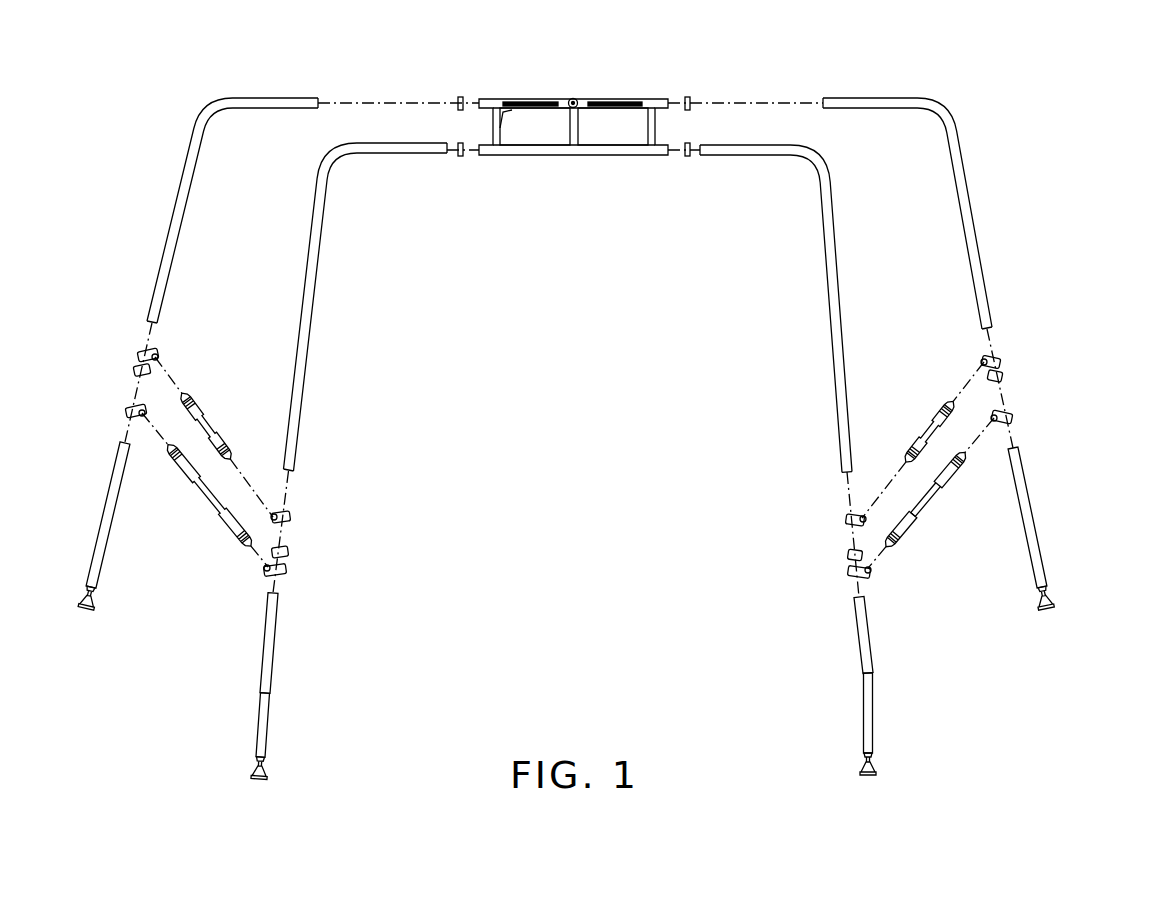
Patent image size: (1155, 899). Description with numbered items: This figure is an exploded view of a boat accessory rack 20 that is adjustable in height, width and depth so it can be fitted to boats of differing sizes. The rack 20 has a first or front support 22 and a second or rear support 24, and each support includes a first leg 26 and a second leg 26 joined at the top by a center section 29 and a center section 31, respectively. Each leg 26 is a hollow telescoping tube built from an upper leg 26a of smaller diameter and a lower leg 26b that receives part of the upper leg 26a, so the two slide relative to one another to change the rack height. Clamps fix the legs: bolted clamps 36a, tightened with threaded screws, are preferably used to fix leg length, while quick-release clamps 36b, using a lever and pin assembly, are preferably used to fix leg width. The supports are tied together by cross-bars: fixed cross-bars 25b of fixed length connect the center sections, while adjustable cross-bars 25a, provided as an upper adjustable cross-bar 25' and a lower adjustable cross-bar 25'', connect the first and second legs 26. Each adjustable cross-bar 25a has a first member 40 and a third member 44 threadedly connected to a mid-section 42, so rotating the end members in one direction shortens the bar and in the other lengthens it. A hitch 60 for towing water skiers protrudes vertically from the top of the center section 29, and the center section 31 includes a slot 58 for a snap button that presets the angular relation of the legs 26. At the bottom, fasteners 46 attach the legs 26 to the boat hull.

The boat accessory rack 20 is at (1038, 199).
The first support 22 is at (823, 270).
The second support 24 is at (960, 150).
The leg 26 is at (311, 383).
The upper leg 26a is at (195, 130).
The lower leg 26b is at (262, 683).
The adjustable cross-bar 25a is at (212, 420).
The fixed cross-bar 25b is at (502, 128).
The upper adjustable cross-bar 25' is at (923, 436).
The lower adjustable cross-bar 25'' is at (931, 494).
The center section 29 is at (605, 156).
The center section 31 is at (622, 97).
The bolted clamp 36a is at (291, 553).
The quick-release clamp 36b is at (460, 97).
The first member 40 is at (907, 533).
The mid-section 42 is at (933, 497).
The third member 44 is at (955, 467).
The fastener 46 is at (872, 770).
The slot 58 is at (515, 100).
The hitch 60 is at (571, 107).